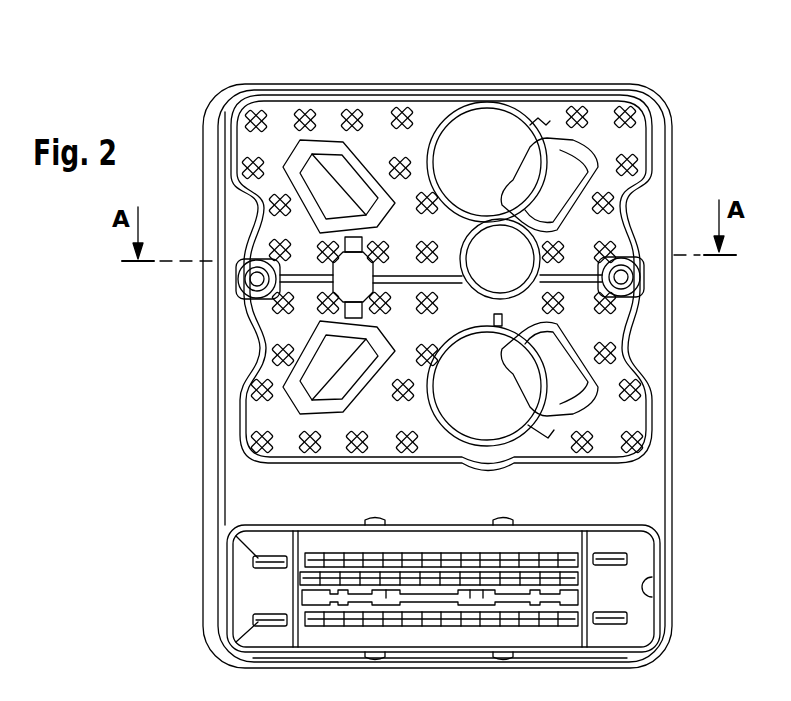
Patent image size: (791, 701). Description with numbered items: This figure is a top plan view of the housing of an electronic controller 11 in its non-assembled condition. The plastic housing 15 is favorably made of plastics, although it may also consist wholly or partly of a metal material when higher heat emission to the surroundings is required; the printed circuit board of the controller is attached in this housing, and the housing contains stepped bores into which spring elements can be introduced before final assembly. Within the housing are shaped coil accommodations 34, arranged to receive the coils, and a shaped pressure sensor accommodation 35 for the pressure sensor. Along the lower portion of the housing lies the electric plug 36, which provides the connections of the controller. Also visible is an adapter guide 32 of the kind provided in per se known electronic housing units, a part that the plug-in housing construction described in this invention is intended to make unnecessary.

The electronic controller 11 is at (700, 130).
The plastic housing 15 is at (415, 97).
The adapter guide 32 is at (348, 273).
The shaped coil accommodations 34 is at (375, 130).
The shaped pressure sensor accommodation 35 is at (498, 268).
The electric plug 36 is at (640, 627).